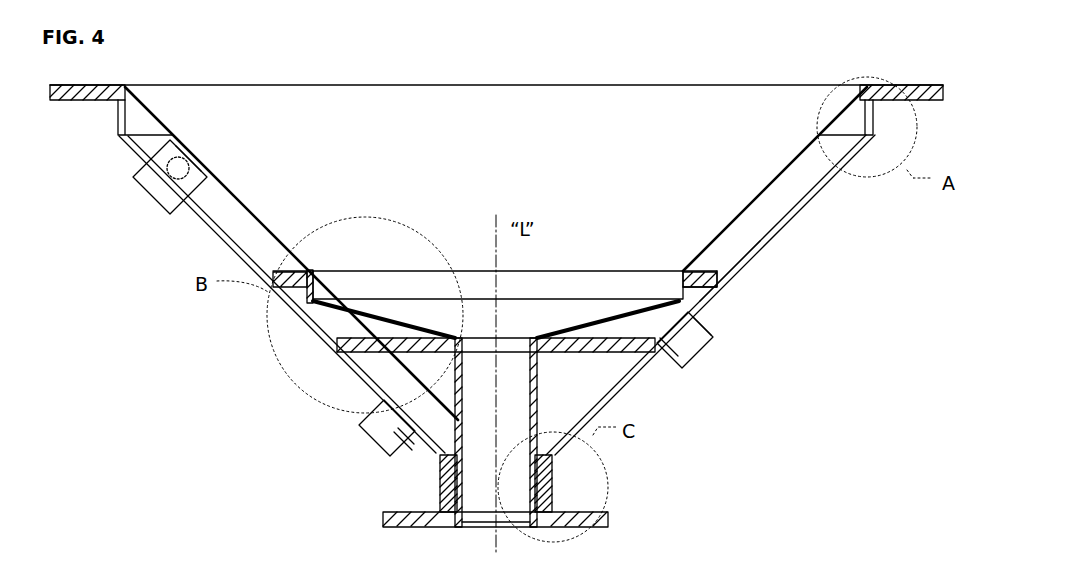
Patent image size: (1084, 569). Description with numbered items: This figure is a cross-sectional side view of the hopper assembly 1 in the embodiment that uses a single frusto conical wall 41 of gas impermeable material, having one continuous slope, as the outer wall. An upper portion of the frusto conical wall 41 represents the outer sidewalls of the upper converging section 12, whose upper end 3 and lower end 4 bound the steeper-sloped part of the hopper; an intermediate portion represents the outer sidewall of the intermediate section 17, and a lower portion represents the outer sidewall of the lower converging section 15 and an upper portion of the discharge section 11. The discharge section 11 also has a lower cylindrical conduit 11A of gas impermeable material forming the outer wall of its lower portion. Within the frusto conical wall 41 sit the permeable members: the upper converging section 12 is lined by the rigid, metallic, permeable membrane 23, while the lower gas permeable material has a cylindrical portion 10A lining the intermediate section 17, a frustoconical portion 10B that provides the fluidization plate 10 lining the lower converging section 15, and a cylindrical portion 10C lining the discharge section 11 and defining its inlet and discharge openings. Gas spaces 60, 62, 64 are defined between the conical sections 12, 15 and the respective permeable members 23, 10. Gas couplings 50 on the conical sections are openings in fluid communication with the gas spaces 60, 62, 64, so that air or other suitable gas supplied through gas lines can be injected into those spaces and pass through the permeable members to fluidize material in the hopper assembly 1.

The hopper assembly 1 is at (282, 73).
The upper end 3 is at (122, 158).
The lower end 4 is at (287, 413).
The fluidization plate 10 is at (568, 331).
The cylindrical portion of gas permeable material 10A is at (682, 292).
The frustoconical portion of lower gas permeable material 10B is at (633, 316).
The cylindrical portion of lower gas permeable material 10C is at (458, 422).
The discharge section 11 is at (440, 485).
The lower cylindrical conduit 11A is at (440, 496).
The upper converging section 12 is at (817, 185).
The lower converging section 15 is at (698, 310).
The intermediate section 17 is at (713, 285).
The permeable membrane 23 is at (253, 212).
The frusto conical wall 41 is at (213, 230).
The gas coupling 50 is at (135, 178).
The gas space 60 is at (787, 193).
The gas space 62 is at (575, 393).
The gas space 64 is at (628, 330).